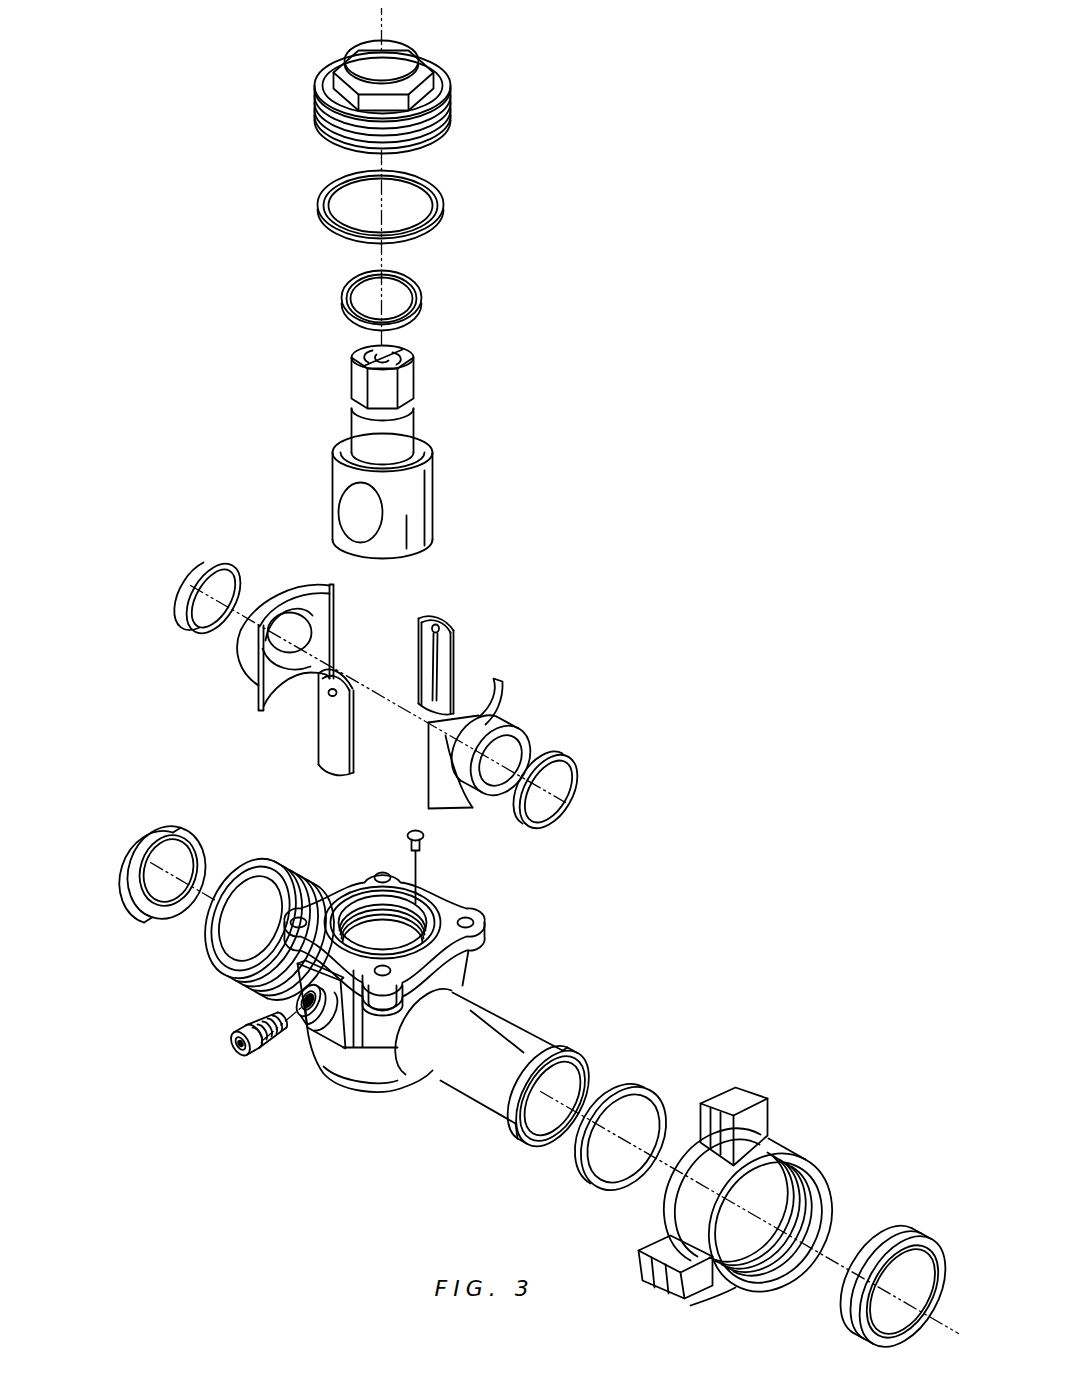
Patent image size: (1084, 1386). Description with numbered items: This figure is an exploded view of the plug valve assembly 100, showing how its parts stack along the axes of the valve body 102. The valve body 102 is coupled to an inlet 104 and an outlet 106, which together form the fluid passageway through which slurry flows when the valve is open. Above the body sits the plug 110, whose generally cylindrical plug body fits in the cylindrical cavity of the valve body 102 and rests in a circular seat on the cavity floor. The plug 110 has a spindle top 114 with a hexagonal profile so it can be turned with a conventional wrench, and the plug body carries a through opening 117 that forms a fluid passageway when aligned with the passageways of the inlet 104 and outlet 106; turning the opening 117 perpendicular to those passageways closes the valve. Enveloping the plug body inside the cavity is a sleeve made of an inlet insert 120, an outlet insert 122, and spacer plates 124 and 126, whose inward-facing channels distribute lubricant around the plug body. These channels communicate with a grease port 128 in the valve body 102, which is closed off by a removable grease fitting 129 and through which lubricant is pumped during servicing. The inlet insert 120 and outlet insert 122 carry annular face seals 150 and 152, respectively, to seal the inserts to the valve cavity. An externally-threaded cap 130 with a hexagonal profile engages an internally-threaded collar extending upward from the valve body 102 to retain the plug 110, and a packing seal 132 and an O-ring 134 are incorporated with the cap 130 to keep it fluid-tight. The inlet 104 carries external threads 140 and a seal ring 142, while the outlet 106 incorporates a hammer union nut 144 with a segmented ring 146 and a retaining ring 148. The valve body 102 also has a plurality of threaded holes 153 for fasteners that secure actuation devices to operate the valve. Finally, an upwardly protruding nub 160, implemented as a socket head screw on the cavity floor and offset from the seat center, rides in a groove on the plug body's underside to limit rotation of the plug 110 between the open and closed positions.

The plug valve assembly 100 is at (786, 99).
The valve body 102 is at (386, 1020).
The inlet 104 is at (282, 998).
The outlet 106 is at (482, 1108).
The plug 110 is at (382, 438).
The spindle top 114 is at (413, 352).
The through opening 117 is at (343, 513).
The inlet insert 120 is at (300, 598).
The outlet insert 122 is at (522, 718).
The spacer plate 124 is at (317, 727).
The spacer plate 126 is at (444, 612).
The grease port 128 is at (303, 1008).
The grease fitting 129 is at (228, 1050).
The externally-threaded cap 130 is at (318, 132).
The packing seal 132 is at (340, 304).
The O-ring 134 is at (455, 207).
The external threads 140 is at (200, 933).
The seal ring 142 is at (127, 883).
The hammer union nut 144 is at (748, 1093).
The segmented ring 146 is at (913, 1233).
The retaining ring 148 is at (598, 1193).
The annular face seal 150 is at (207, 568).
The annular face seal 152 is at (588, 769).
The threaded holes 153 is at (468, 908).
The nub 160 is at (407, 833).